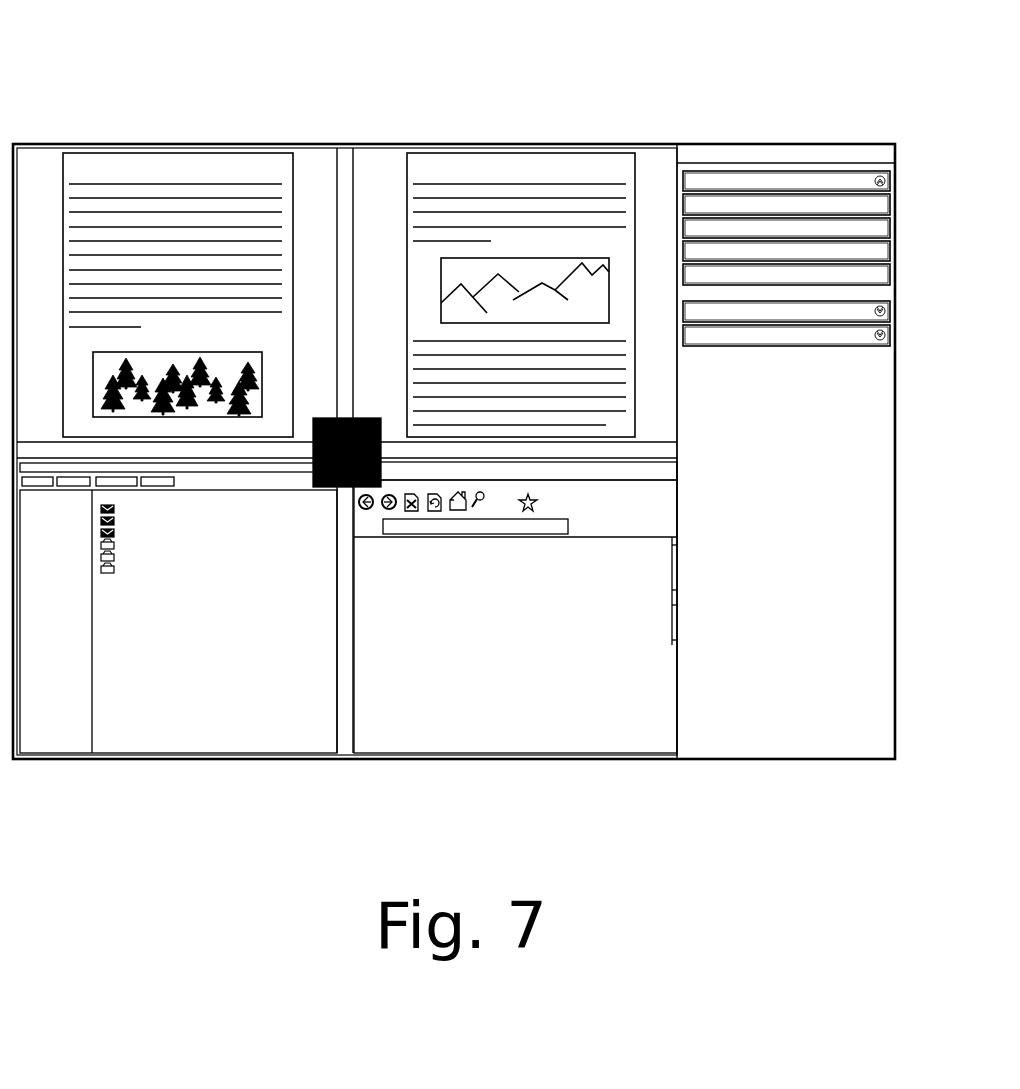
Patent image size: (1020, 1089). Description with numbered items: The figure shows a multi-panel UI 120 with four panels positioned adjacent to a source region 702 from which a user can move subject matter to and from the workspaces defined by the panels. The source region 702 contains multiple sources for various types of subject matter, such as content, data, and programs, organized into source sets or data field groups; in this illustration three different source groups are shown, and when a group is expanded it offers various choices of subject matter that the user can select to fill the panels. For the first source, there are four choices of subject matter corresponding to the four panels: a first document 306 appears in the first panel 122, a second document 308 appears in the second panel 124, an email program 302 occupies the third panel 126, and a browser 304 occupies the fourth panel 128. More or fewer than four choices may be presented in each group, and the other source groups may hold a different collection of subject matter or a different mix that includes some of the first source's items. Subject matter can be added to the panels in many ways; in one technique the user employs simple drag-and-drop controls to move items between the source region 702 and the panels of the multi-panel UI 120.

The multi-panel UI 120 is at (302, 62).
The first panel 122 is at (290, 143).
The second panel 124 is at (433, 143).
The third panel 126 is at (290, 760).
The fourth panel 128 is at (415, 760).
The email program 302 is at (214, 708).
The browser 304 is at (551, 710).
The first document 306 is at (175, 170).
The second document 308 is at (551, 170).
The source region 702 is at (765, 418).